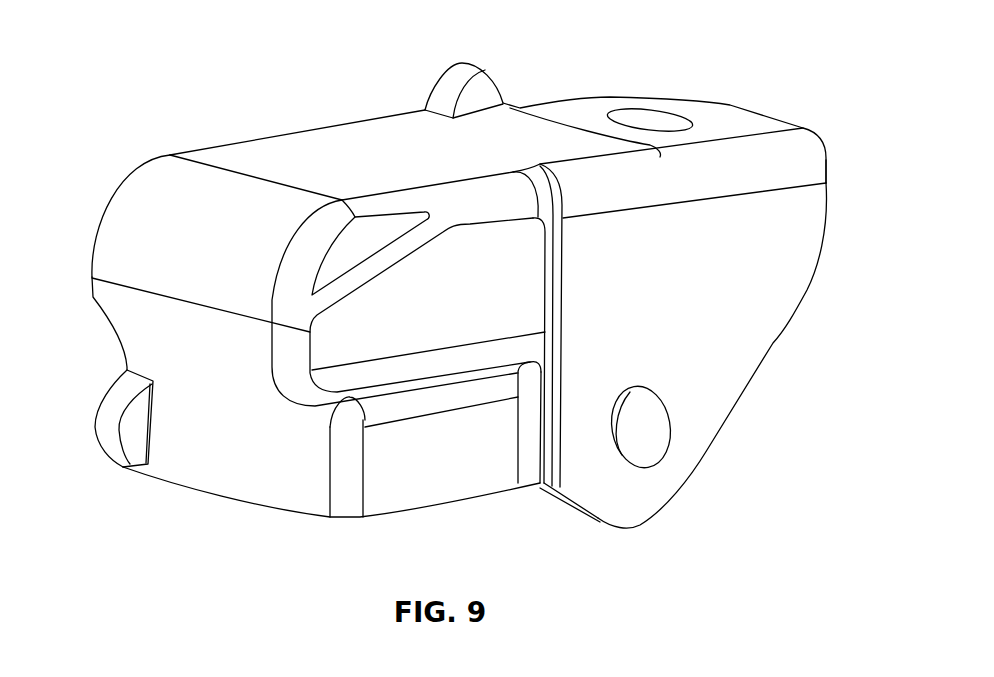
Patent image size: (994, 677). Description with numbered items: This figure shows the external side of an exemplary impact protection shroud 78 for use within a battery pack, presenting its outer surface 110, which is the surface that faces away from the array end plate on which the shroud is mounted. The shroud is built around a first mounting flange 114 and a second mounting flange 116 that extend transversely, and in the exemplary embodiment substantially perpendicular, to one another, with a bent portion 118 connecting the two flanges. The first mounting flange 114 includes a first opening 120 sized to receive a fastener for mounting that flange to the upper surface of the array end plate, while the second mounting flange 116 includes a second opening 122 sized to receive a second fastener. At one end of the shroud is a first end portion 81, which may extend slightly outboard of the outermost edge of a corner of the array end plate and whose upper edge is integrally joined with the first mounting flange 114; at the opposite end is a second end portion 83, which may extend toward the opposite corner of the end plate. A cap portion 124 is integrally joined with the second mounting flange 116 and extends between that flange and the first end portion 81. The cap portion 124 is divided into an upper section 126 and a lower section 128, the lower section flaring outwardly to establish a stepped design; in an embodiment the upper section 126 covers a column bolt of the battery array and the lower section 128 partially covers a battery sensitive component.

The impact protection shroud 78 is at (618, 98).
The first mounting flange 114 is at (527, 125).
The first opening 120 is at (664, 122).
The bent portion 118 is at (810, 157).
The second end portion 83 is at (828, 203).
The second mounting flange 116 is at (730, 317).
The second opening 122 is at (648, 413).
The outer surface 110 is at (468, 487).
The upper section 126 is at (372, 320).
The cap portion 124 is at (340, 407).
The lower section 128 is at (375, 483).
The first end portion 81 is at (143, 305).